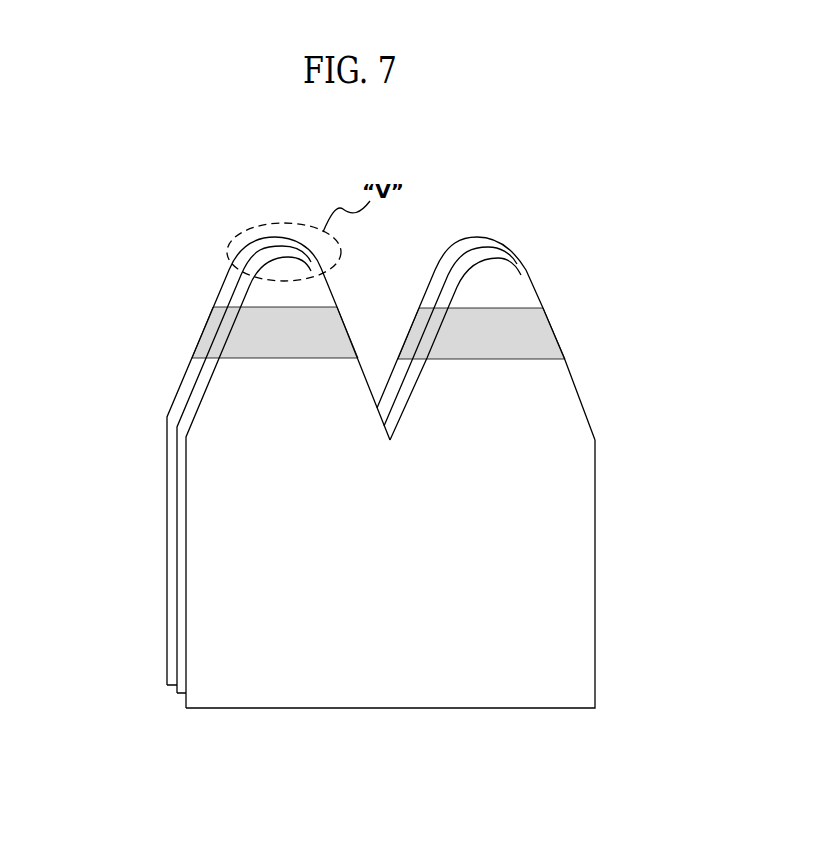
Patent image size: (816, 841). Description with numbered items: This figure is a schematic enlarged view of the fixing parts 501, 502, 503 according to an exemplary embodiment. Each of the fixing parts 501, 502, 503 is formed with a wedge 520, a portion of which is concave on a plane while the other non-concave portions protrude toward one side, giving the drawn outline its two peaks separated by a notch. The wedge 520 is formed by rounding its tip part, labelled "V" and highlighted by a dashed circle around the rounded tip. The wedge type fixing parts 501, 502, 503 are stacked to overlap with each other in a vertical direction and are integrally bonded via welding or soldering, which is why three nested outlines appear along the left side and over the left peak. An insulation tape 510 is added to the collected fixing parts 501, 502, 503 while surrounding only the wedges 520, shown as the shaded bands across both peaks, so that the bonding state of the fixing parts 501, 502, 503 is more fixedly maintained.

The fixing part 501 is at (198, 714).
The fixing part 502 is at (174, 699).
The fixing part 503 is at (160, 675).
The insulation tape 510 is at (252, 330).
The wedge 520 is at (517, 284).